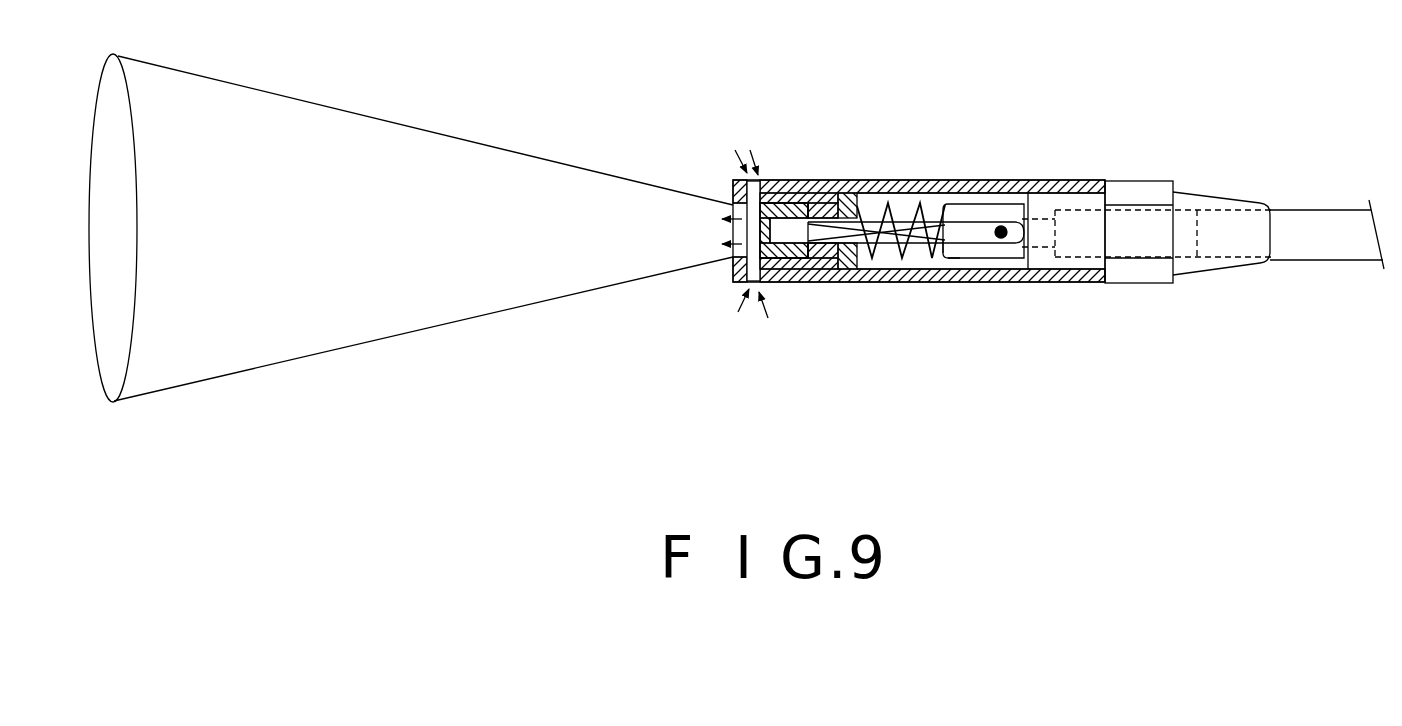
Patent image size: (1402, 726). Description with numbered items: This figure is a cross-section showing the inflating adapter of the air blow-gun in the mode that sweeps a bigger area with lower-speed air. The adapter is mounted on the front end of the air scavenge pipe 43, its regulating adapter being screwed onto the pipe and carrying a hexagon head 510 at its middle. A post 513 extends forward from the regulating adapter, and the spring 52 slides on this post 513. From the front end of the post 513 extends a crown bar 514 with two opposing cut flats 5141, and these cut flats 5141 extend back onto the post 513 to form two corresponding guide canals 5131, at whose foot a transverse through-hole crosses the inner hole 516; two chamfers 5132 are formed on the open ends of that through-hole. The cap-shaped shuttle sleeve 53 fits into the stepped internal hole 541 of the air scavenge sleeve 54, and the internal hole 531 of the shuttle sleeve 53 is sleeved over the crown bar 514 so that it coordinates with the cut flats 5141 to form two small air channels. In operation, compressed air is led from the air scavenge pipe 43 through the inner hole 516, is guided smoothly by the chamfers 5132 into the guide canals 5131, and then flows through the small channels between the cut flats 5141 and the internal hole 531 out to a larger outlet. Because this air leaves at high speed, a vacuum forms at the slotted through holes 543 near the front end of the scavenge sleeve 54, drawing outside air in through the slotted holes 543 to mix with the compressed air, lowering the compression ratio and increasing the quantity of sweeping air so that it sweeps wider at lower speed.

The air scavenge pipe 43 is at (1285, 222).
The hexagon head 510 is at (1152, 275).
The post 513 is at (983, 252).
The guide canals 5131 is at (957, 238).
The chamfers 5132 is at (1002, 226).
The crown bar 514 is at (897, 235).
The cut flats 5141 is at (816, 237).
The inner hole 516 is at (1088, 225).
The spring 52 is at (915, 235).
The shuttle sleeve 53 is at (815, 180).
The internal hole of shuttle sleeve 531 is at (784, 228).
The air scavenge sleeve 54 is at (775, 180).
The stepped internal hole 541 is at (734, 283).
The slotted through holes 543 is at (733, 182).